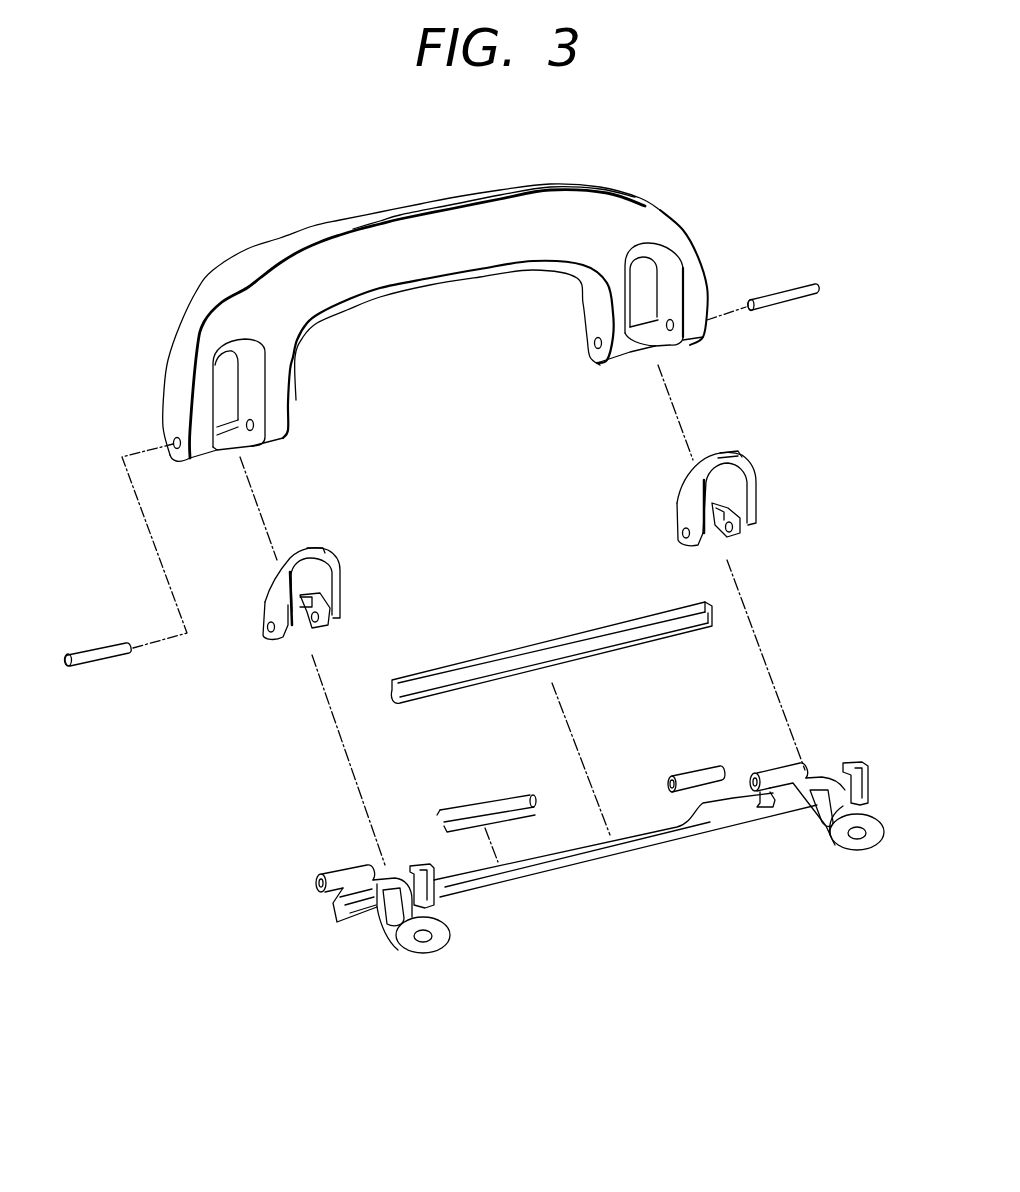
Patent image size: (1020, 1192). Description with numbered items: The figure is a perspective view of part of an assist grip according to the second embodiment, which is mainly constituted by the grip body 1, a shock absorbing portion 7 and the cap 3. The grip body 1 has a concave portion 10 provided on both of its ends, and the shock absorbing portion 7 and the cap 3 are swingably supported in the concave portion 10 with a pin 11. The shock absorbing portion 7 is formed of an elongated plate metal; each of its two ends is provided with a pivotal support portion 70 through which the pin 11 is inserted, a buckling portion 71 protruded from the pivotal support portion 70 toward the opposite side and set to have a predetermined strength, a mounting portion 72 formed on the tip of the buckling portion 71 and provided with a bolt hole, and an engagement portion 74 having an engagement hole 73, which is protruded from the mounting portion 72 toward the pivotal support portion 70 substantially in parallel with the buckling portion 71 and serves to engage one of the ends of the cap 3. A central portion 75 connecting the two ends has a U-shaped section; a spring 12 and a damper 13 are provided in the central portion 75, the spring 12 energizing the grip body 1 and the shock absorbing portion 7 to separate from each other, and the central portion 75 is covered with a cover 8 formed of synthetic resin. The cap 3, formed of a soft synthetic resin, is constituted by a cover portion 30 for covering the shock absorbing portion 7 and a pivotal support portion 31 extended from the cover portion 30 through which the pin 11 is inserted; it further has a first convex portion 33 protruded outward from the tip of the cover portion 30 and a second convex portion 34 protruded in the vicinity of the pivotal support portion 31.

The grip body 1 is at (476, 225).
The concave portion 10 is at (240, 358).
The pin 11 is at (790, 295).
The cap 3 is at (553, 506).
The cover portion 30 is at (758, 497).
The pivotal support portion 31 is at (680, 523).
The first convex portion 33 is at (735, 453).
The second convex portion 34 is at (722, 527).
The cover 8 is at (585, 632).
The spring 12 is at (495, 805).
The damper 13 is at (702, 772).
The shock absorbing portion 7 is at (588, 863).
The pivotal support portion 70 is at (345, 872).
The buckling portion 71 is at (375, 925).
The mounting portion 72 is at (418, 952).
The engagement hole 73 is at (848, 763).
The engagement portion 74 is at (470, 895).
The central portion 75 is at (627, 848).